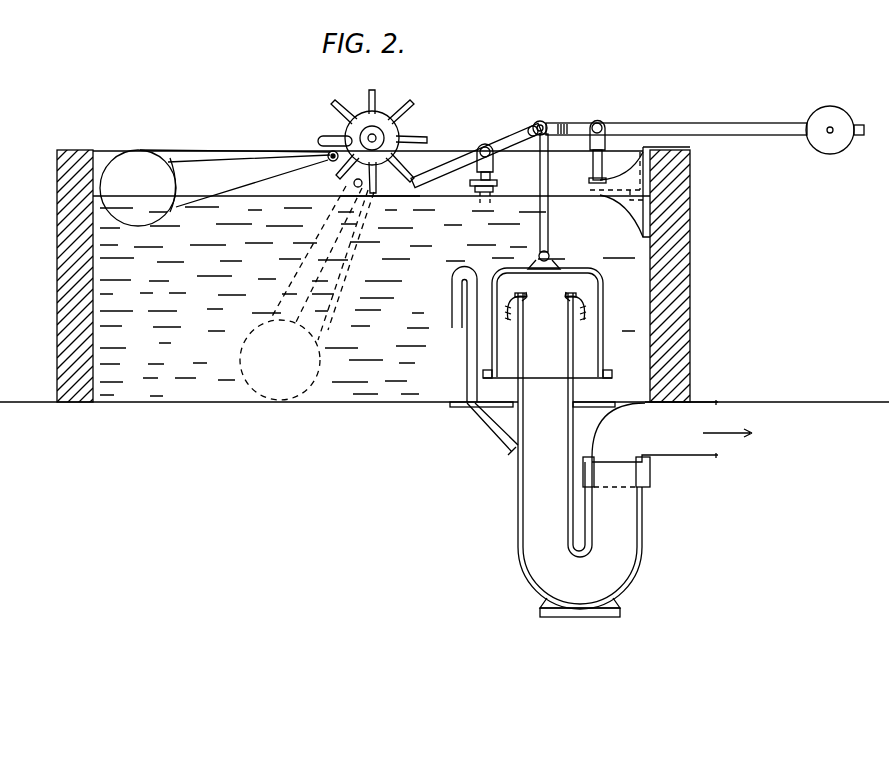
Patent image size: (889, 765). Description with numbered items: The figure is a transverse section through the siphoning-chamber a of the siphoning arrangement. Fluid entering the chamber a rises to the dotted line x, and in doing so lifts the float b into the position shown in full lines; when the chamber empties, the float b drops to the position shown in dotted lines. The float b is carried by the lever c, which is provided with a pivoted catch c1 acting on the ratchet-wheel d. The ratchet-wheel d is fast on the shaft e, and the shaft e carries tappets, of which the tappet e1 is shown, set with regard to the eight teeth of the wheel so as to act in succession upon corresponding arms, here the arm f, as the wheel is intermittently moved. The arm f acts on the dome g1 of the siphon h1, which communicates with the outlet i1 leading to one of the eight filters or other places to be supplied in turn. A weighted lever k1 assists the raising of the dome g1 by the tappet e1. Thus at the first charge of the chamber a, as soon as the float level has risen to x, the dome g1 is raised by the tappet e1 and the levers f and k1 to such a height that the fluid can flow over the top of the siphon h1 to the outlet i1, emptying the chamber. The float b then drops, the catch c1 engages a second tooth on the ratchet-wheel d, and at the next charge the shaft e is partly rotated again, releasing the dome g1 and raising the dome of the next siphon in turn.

The siphoning-chamber a is at (97, 345).
The float b is at (237, 275).
The lever c is at (228, 168).
The pivoted catch c1 is at (320, 141).
The ratchet-wheel d is at (352, 125).
The shaft e is at (400, 128).
The tappet e1 is at (375, 139).
The arm or lever f is at (451, 166).
The fluid level line x is at (352, 189).
The dome g1 is at (603, 285).
The siphon h1 is at (550, 455).
The outlet i1 is at (672, 431).
The weighted lever k1 is at (705, 136).